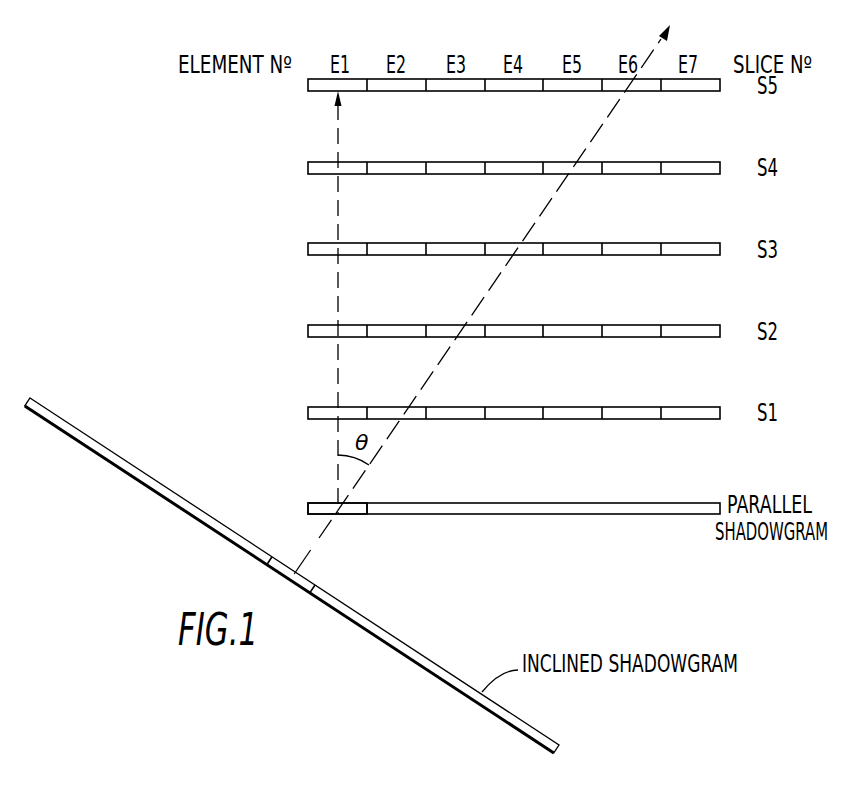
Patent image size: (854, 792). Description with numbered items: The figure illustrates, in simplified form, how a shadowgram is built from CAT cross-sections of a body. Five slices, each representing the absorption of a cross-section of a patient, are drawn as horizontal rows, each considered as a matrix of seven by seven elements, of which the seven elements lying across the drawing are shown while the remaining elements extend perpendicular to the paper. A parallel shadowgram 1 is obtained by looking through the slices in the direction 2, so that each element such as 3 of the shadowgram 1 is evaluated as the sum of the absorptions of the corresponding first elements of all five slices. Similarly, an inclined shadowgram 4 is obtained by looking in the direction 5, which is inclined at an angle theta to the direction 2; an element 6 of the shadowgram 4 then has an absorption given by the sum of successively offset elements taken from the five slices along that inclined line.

The shadowgram 1 is at (647, 503).
The direction 2 is at (333, 101).
The element 3 is at (320, 503).
The shadowgram 4 is at (85, 433).
The direction 5 is at (492, 299).
The element 6 is at (308, 580).